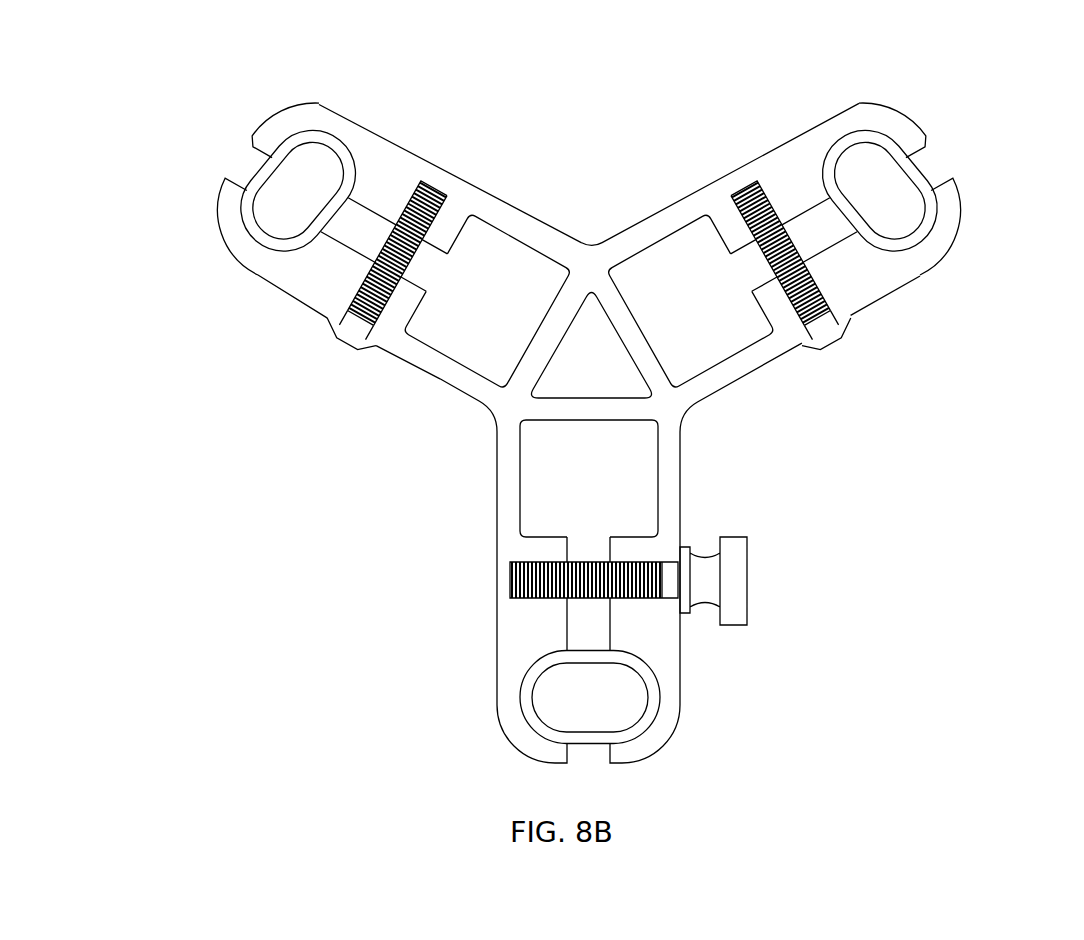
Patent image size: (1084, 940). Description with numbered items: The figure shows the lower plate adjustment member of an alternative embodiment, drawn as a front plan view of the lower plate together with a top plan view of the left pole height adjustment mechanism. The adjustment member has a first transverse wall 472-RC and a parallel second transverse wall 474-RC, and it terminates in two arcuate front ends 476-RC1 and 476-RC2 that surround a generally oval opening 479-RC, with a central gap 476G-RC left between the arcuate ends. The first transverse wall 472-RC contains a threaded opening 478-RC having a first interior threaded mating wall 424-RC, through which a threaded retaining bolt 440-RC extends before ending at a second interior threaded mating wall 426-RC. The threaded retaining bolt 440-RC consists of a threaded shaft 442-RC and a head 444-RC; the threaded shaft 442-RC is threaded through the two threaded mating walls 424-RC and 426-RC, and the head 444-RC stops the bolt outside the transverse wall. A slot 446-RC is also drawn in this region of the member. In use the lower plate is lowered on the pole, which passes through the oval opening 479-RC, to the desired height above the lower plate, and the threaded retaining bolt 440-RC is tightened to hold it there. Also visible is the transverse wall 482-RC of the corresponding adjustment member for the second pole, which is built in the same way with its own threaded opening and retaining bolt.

The first interior threaded mating wall 424-RC is at (408, 340).
The second interior threaded mating wall 426-RC is at (453, 213).
The threaded retaining bolt 440-RC is at (363, 285).
The threaded shaft 442-RC is at (433, 190).
The head 444-RC is at (335, 340).
The slot 446-RC is at (367, 203).
The first transverse wall 472-RC is at (440, 380).
The second transverse wall 474-RC is at (538, 219).
The arcuate front end 476-RC1 is at (222, 213).
The arcuate front end 476-RC2 is at (278, 112).
The central gap 476G-RC is at (275, 185).
The threaded opening 478-RC is at (328, 318).
The generally oval opening 479-RC is at (250, 177).
The transverse wall 482-RC is at (687, 413).